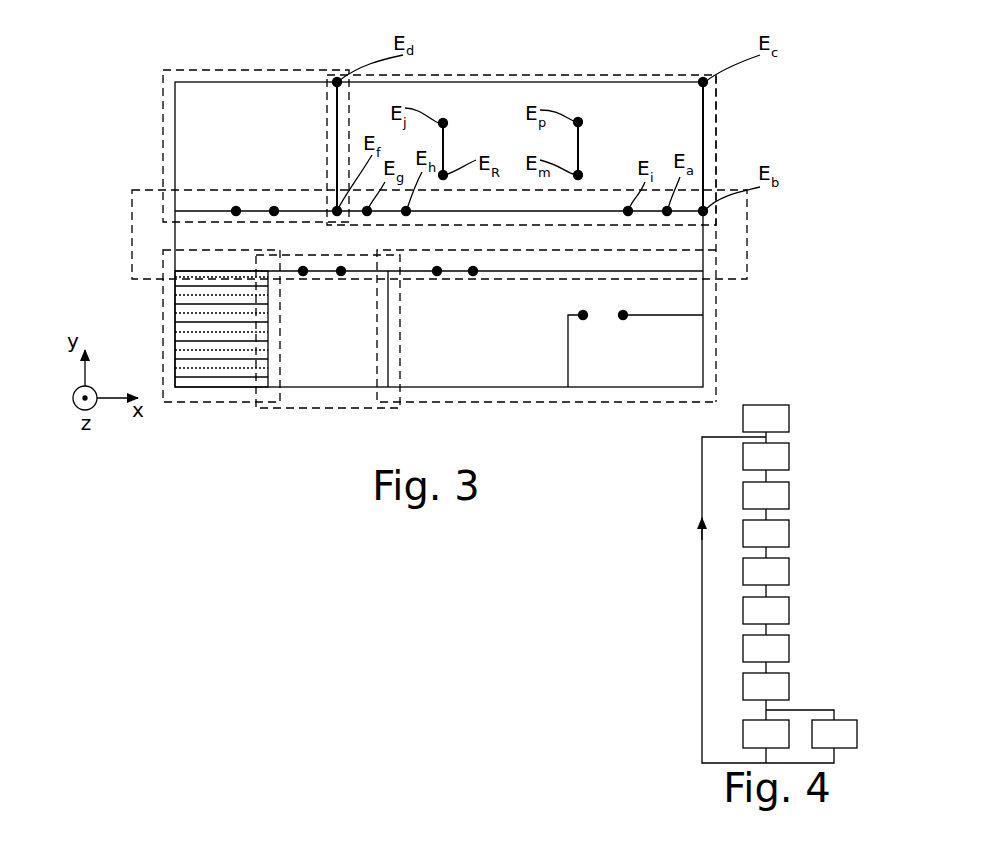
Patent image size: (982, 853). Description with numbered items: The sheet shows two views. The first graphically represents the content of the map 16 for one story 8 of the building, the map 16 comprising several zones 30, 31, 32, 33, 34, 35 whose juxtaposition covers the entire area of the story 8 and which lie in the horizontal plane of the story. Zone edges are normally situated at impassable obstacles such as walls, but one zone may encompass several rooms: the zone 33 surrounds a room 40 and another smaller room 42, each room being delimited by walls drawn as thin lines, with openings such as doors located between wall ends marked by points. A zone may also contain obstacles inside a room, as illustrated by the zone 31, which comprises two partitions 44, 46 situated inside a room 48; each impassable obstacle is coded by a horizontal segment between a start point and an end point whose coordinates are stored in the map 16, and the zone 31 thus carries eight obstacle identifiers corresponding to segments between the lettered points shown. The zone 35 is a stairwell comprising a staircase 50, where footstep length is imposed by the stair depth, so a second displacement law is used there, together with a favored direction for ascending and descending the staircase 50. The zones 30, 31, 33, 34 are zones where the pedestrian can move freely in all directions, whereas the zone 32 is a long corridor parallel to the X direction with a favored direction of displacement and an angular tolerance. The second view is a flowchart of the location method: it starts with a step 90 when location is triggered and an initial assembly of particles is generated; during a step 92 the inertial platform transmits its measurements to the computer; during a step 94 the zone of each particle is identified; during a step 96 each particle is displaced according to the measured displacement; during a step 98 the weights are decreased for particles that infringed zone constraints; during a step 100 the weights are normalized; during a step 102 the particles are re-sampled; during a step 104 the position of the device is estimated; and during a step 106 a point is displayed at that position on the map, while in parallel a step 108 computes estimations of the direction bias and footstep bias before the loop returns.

In FIG. 3, the story 8 is at (718, 150).
In FIG. 3, the map 16 is at (145, 143).
In FIG. 3, the zone 30 is at (258, 70).
In FIG. 3, the zone 31 is at (532, 73).
In FIG. 3, the zone 32 is at (750, 235).
In FIG. 3, the zone 33 is at (720, 325).
In FIG. 3, the zone 34 is at (337, 410).
In FIG. 3, the zone 35 is at (222, 404).
In FIG. 3, the room 40 is at (500, 362).
In FIG. 3, the room 42 is at (640, 362).
In FIG. 3, the partition 44 is at (446, 148).
In FIG. 3, the partition 46 is at (580, 150).
In FIG. 3, the room 48 is at (642, 105).
In FIG. 3, the staircase 50 is at (187, 318).
In FIG. 4, the step 90 is at (766, 418).
In FIG. 4, the step 92 is at (766, 456).
In FIG. 4, the step 94 is at (766, 495).
In FIG. 4, the step 96 is at (766, 533).
In FIG. 4, the step 98 is at (766, 571).
In FIG. 4, the step 100 is at (766, 610).
In FIG. 4, the step 102 is at (766, 648).
In FIG. 4, the step 104 is at (766, 686).
In FIG. 4, the step 106 is at (766, 734).
In FIG. 4, the step 108 is at (834, 734).